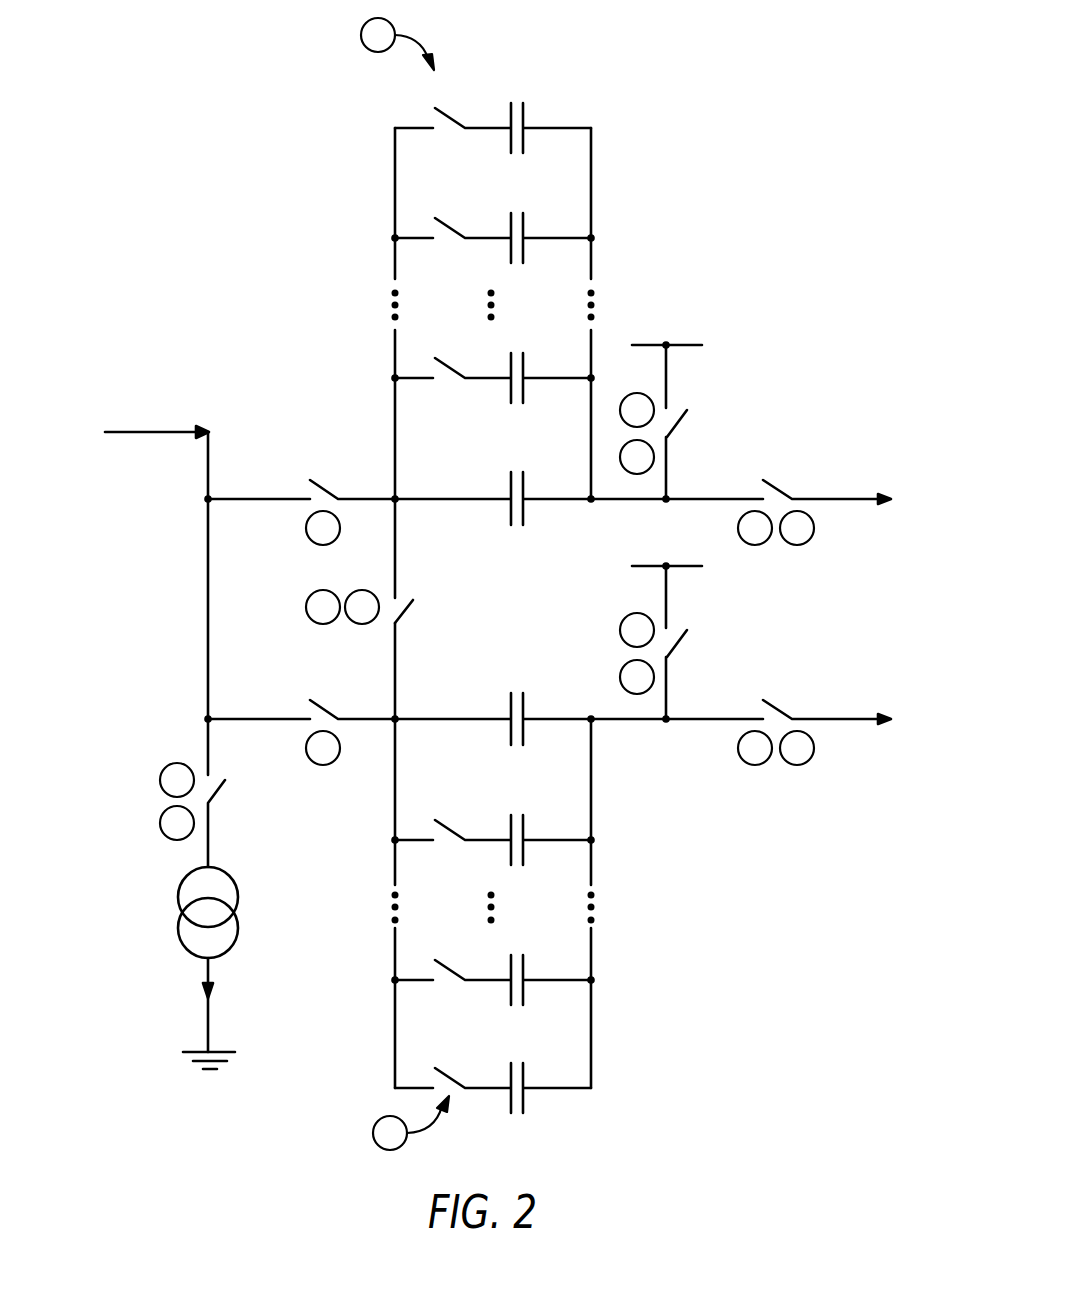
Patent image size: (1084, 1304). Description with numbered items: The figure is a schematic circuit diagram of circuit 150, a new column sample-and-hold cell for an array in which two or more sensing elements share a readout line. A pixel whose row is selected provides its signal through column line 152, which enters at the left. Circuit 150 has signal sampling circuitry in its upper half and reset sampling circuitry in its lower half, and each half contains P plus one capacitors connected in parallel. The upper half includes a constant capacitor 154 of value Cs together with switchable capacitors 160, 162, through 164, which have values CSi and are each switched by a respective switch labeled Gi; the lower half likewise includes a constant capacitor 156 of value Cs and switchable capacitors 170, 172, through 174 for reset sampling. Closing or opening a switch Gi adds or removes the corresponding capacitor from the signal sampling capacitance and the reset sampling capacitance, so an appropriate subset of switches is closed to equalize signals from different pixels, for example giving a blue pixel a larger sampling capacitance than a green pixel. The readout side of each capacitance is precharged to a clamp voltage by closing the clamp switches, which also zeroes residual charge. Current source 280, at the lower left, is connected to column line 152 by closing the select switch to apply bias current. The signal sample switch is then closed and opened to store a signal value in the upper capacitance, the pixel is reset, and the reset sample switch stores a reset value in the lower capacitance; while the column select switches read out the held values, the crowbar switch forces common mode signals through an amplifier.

The circuit 150 is at (250, 256).
The column line 152 is at (163, 434).
The constant capacitor 154 is at (524, 505).
The constant capacitor 156 is at (511, 708).
The switchable capacitor 160 is at (524, 115).
The switchable capacitor 162 is at (511, 248).
The switchable capacitor 164 is at (511, 388).
The switchable capacitor 170 is at (524, 1100).
The switchable capacitor 172 is at (524, 990).
The switchable capacitor 174 is at (511, 846).
The current source 280 is at (178, 900).